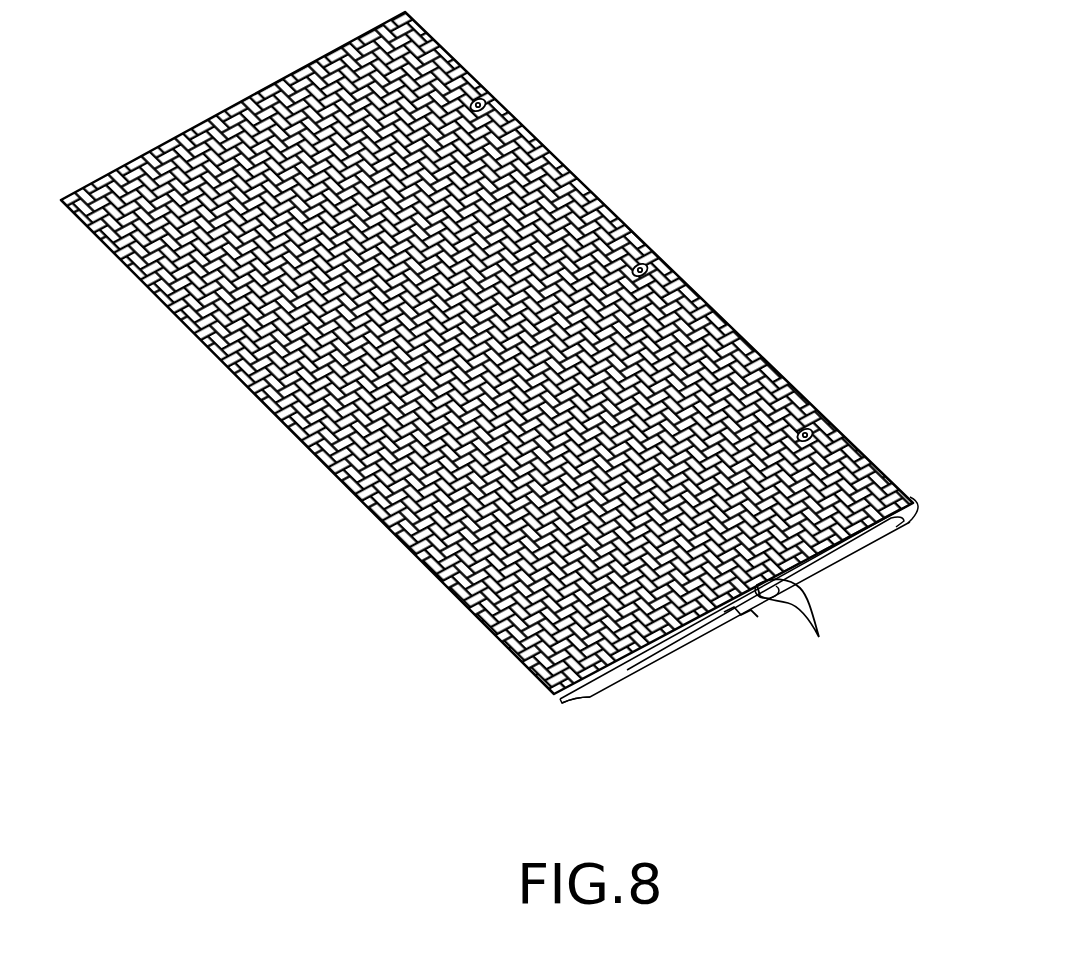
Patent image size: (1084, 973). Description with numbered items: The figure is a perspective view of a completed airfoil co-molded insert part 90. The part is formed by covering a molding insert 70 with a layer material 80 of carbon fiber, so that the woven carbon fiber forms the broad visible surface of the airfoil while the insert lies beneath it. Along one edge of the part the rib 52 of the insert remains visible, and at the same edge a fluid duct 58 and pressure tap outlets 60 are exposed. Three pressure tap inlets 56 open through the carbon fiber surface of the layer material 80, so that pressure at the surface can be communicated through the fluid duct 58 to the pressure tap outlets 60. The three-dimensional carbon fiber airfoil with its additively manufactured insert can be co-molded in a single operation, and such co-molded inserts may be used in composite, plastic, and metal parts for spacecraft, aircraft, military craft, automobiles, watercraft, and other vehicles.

The rib 52 is at (610, 681).
The pressure tap inlets 56 is at (486, 103).
The fluid duct 58 is at (748, 614).
The pressure tap outlets 60 is at (819, 637).
The molding insert 70 is at (895, 522).
The layer material 80 is at (560, 229).
The co-molded insert part 90 is at (740, 103).